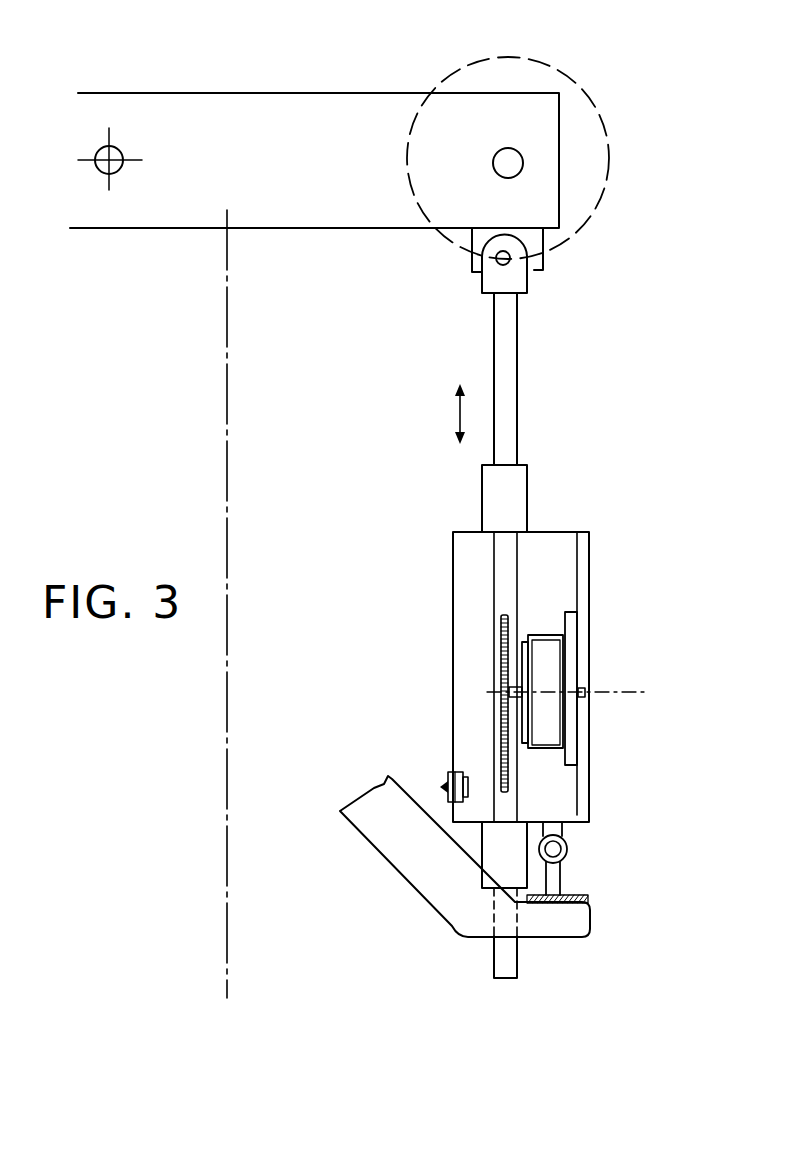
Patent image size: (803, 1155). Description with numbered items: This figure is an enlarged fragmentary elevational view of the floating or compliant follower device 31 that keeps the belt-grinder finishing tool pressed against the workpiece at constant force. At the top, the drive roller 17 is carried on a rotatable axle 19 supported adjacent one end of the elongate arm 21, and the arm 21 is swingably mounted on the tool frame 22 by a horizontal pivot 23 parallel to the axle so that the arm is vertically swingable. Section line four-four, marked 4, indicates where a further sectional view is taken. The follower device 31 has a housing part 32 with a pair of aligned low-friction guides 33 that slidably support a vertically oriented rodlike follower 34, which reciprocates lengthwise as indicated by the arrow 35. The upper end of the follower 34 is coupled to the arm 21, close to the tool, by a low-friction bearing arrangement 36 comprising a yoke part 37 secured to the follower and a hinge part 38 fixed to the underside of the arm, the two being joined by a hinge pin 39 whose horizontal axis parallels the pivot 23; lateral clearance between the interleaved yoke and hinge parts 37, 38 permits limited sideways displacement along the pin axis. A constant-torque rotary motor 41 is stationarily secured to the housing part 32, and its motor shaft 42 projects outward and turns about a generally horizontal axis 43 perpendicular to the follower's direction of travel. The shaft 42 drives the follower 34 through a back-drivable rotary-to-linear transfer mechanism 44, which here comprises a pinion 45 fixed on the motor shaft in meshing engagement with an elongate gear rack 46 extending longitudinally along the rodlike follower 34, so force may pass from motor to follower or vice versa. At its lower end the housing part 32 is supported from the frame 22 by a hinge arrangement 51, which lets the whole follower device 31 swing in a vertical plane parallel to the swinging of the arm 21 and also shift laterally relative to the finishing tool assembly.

The section line 4- 4 is at (262, 998).
The drive roller 17 is at (596, 106).
The axle 19 is at (506, 148).
The elongate arm 21 is at (248, 113).
The tool frame 22 is at (365, 815).
The pivot 23 is at (115, 150).
The follower device 31 is at (396, 510).
The housing part 32 is at (560, 533).
The guides 33 is at (517, 490).
The rodlike follower 34 is at (508, 377).
The arrow 35 is at (460, 412).
The bearing arrangement 36 is at (462, 303).
The yoke part 37 is at (522, 282).
The hinge part 38 is at (543, 270).
The hinge pin 39 is at (503, 259).
The rotary motor 41 is at (553, 679).
The motor shaft 42 is at (515, 689).
The horizontal axis 43 is at (620, 697).
The rotary-to-linear transfer mechanism 44 is at (483, 723).
The pinion 45 is at (505, 690).
The gear rack 46 is at (502, 629).
The hinge arrangement 51 is at (562, 849).